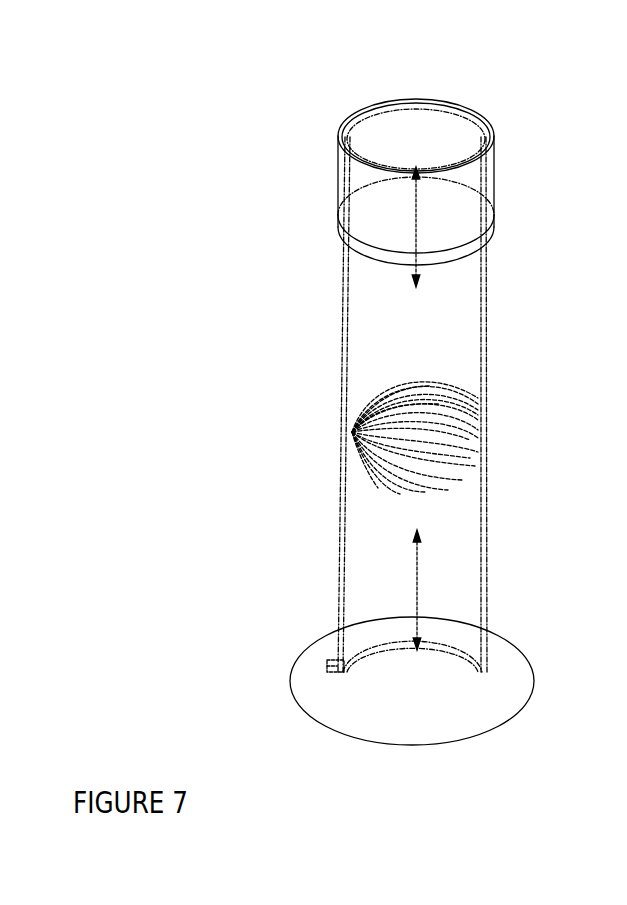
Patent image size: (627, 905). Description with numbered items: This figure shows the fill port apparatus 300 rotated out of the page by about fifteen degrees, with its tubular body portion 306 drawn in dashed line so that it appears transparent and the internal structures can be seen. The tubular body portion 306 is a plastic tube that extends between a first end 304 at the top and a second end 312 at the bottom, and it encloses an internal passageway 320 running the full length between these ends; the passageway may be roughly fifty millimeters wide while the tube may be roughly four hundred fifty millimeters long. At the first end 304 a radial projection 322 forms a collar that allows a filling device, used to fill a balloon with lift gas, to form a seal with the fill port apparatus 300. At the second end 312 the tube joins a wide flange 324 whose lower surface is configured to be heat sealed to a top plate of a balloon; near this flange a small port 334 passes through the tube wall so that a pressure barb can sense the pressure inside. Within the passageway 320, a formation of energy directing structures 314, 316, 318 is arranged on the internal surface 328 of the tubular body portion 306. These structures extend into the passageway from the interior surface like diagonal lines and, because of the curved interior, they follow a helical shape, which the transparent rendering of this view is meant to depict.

The fill port apparatus 300 is at (206, 313).
The first end 304 is at (393, 77).
The tubular body portion 306 is at (343, 296).
The second end 312 is at (392, 769).
The energy directing structure 314 is at (460, 383).
The energy directing structure 316 is at (420, 378).
The energy directing structure 318 is at (397, 378).
The internal passageway 320 is at (418, 408).
The radial projection 322 is at (334, 164).
The flange 324 is at (292, 700).
The internal surface 328 is at (372, 520).
The port 334 is at (326, 665).